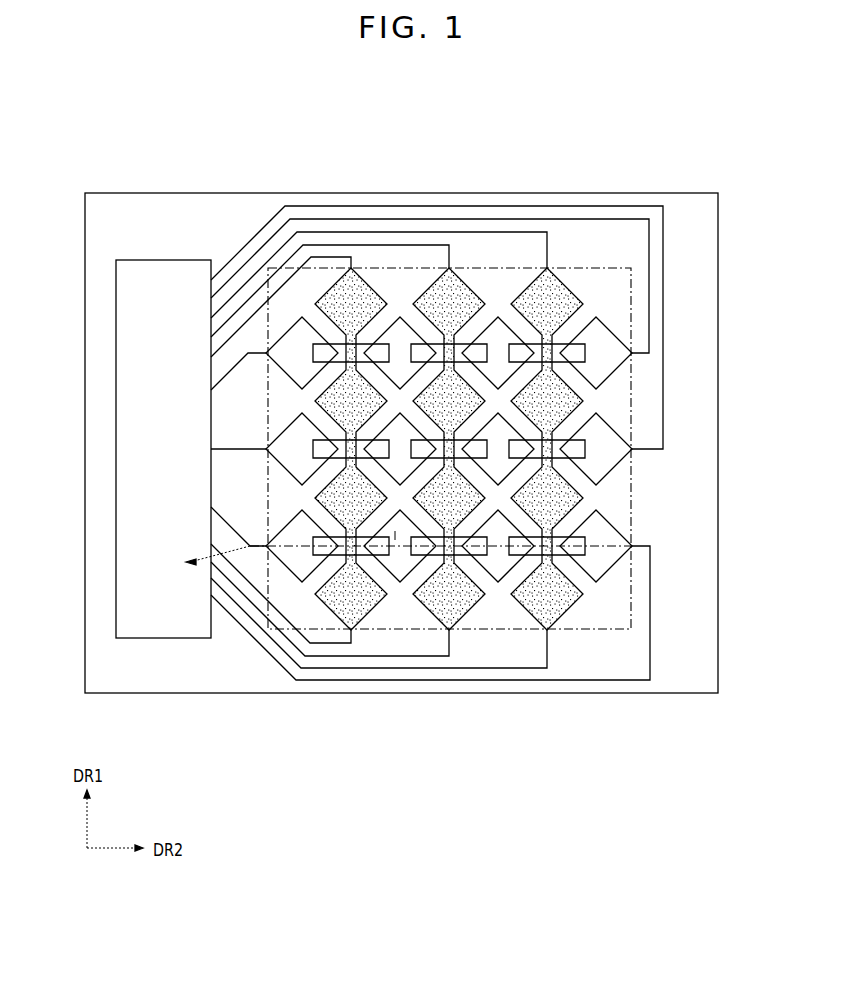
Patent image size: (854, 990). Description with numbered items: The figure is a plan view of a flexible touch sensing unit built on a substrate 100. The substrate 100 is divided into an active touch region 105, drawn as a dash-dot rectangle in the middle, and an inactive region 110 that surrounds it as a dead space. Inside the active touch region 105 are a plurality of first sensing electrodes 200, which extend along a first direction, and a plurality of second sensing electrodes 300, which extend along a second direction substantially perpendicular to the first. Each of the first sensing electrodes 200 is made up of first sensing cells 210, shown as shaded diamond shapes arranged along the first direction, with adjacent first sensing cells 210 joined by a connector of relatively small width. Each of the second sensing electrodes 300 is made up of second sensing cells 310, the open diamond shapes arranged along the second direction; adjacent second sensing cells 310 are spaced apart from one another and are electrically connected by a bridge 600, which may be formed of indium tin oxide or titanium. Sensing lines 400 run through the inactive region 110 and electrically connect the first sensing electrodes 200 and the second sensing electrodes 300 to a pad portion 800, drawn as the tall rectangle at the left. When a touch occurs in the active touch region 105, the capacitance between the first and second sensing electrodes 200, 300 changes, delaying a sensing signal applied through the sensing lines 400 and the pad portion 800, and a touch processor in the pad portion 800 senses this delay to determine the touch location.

The substrate 100 is at (598, 693).
The active touch region 105 is at (598, 267).
The inactive region 110 is at (157, 215).
The first sensing electrodes 200 is at (381, 266).
The first sensing cells 210 is at (346, 634).
The second sensing electrodes 300 is at (289, 327).
The second sensing cells 310 is at (297, 650).
The sensing lines 400 is at (480, 232).
The bridge 600 is at (632, 546).
The pad portion 800 is at (116, 449).